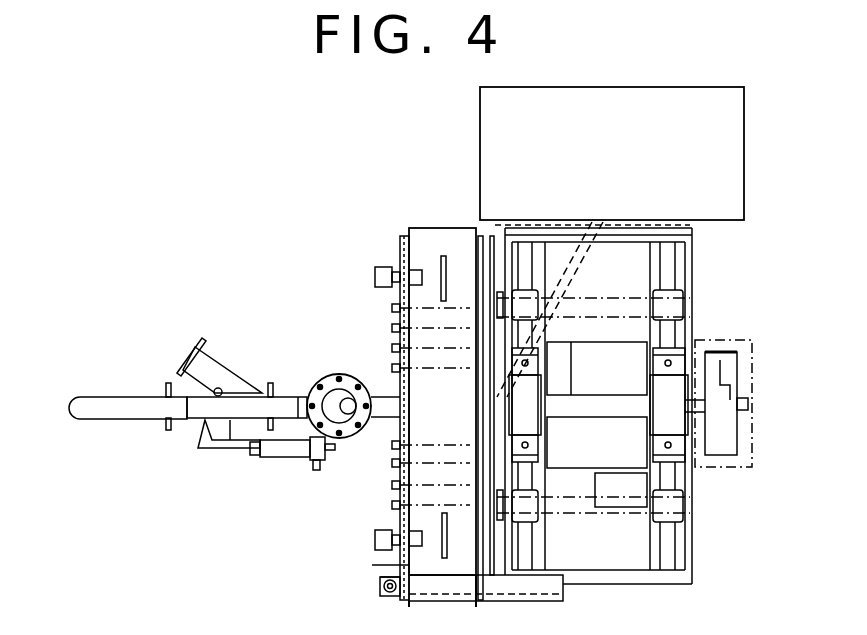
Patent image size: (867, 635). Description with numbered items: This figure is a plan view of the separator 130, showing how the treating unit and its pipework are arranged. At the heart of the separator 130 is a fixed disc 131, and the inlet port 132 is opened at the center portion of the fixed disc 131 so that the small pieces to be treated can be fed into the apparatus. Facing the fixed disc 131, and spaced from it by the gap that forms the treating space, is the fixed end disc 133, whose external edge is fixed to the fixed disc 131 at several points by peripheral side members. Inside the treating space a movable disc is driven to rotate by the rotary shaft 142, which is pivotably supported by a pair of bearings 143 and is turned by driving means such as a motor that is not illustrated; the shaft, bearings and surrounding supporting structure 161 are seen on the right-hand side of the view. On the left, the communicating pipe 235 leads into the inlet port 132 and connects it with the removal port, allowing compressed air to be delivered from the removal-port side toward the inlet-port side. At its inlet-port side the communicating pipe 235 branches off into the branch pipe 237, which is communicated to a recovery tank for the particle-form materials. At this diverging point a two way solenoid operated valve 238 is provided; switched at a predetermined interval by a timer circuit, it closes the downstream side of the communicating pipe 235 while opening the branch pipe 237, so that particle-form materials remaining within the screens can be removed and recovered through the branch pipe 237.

The separator 130 is at (378, 204).
The fixed disc 131 is at (400, 250).
The inlet port 132 is at (331, 378).
The fixed end disc 133 is at (492, 250).
The rotary shaft 142 is at (617, 405).
The bearings 143 is at (528, 422).
The frame block 161 is at (630, 355).
The communicating pipe 235 is at (97, 400).
The branch pipe 237 is at (205, 345).
The two way solenoid operated valve 238 is at (287, 457).